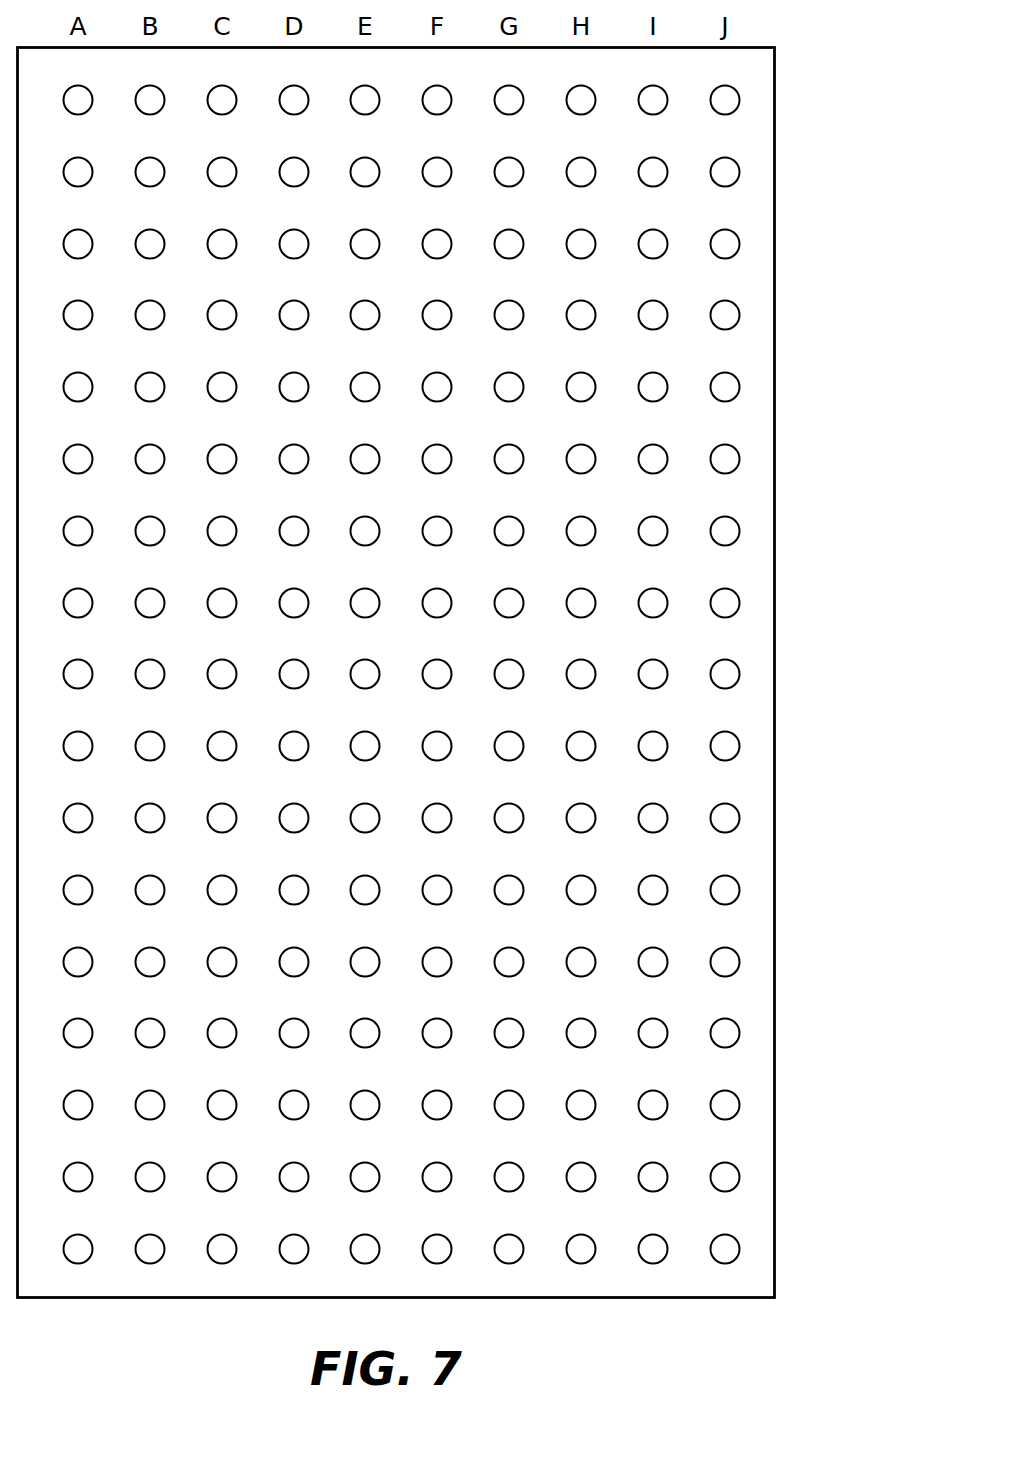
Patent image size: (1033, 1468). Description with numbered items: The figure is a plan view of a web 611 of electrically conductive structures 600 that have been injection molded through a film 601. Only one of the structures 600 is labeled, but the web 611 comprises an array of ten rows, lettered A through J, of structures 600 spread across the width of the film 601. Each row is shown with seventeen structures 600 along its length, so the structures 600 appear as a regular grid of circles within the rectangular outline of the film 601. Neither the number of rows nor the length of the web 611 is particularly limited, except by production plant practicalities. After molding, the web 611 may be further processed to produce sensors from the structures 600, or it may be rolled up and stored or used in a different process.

The electrically conductive structure 600 is at (728, 1101).
The film 601 is at (618, 1280).
The web 611 is at (198, 1322).